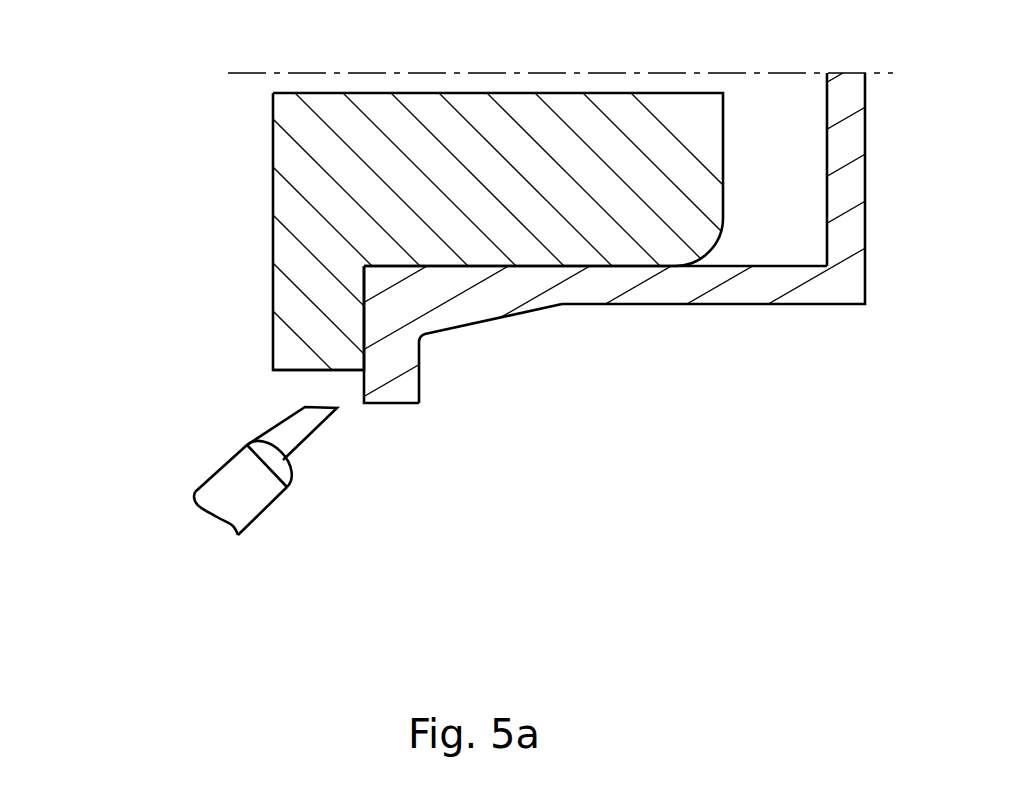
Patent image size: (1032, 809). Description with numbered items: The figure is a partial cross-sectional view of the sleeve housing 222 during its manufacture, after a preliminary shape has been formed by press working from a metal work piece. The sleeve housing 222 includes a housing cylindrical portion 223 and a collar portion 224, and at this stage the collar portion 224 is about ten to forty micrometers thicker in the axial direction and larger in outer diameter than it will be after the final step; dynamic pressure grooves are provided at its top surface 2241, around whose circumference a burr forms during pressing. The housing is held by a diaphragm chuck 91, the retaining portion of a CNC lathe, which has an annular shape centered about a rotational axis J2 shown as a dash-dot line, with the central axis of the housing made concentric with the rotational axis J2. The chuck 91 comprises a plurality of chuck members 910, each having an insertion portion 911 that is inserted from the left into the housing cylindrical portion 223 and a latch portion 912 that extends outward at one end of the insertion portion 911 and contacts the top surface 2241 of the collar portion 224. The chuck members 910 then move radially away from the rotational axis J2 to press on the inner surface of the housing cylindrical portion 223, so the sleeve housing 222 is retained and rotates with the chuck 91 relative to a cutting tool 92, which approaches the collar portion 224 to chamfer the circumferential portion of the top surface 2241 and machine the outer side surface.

The chuck 91 is at (135, 168).
The chuck member 910 is at (182, 263).
The insertion portion 911 is at (462, 190).
The latch portion 912 is at (320, 323).
The cutting tool 92 is at (227, 477).
The sleeve housing 222 is at (663, 362).
The housing cylindrical portion 223 is at (685, 285).
The collar portion 224 is at (395, 362).
The top surface 2241 is at (362, 387).
The rotational axis J2 is at (290, 74).